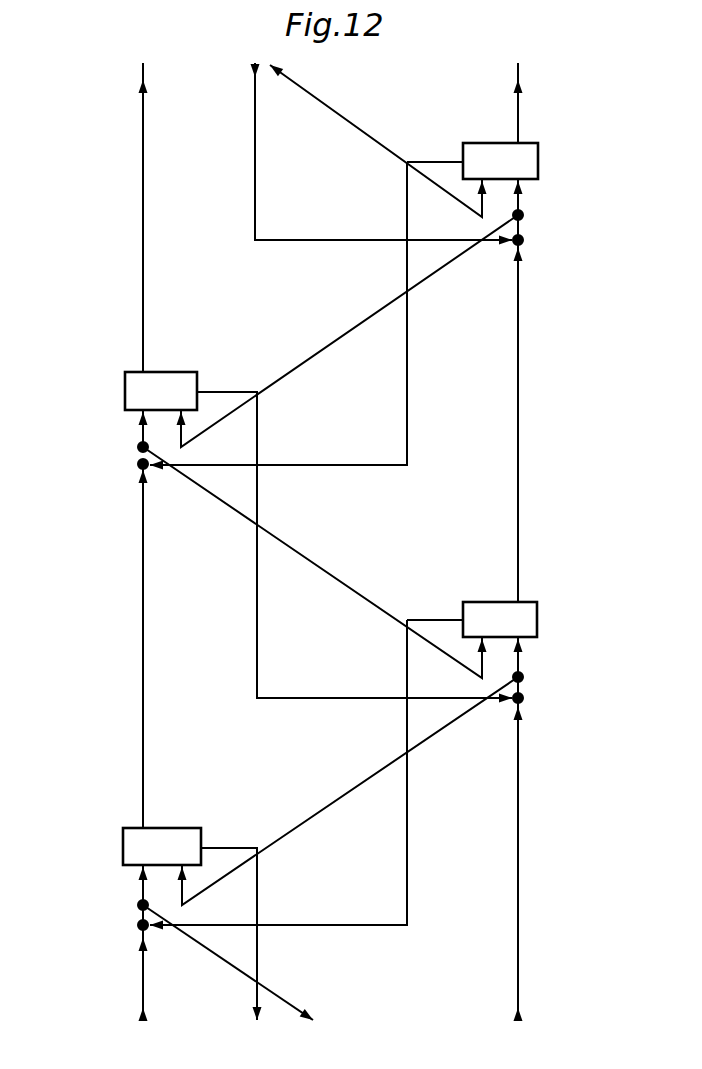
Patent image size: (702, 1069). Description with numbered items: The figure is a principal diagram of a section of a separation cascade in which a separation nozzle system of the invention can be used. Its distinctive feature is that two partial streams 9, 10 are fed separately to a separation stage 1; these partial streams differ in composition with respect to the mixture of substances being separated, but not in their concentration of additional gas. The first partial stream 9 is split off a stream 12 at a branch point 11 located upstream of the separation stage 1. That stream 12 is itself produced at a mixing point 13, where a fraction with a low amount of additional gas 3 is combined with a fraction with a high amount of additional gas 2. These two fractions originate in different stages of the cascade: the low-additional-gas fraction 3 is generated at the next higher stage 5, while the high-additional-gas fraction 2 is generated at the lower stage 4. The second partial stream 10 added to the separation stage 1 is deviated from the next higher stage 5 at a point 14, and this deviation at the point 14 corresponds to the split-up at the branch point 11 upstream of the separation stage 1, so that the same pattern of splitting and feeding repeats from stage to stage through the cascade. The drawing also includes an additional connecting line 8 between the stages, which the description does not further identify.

The separation stage 1 is at (125, 388).
The fraction with a high amount of additional gas 2 is at (142, 588).
The fraction with a low amount of additional gas 3 is at (340, 467).
The stage generating the high-additional-gas fraction 4 is at (124, 850).
The next higher stage 5 is at (532, 159).
The cross connection line 8 is at (335, 565).
The partial stream 9 is at (140, 428).
The partial stream 10 is at (296, 372).
The split-off point 11 is at (138, 448).
The stream 12 is at (138, 458).
The mixing point 13 is at (138, 470).
The deviation point 14 is at (524, 214).